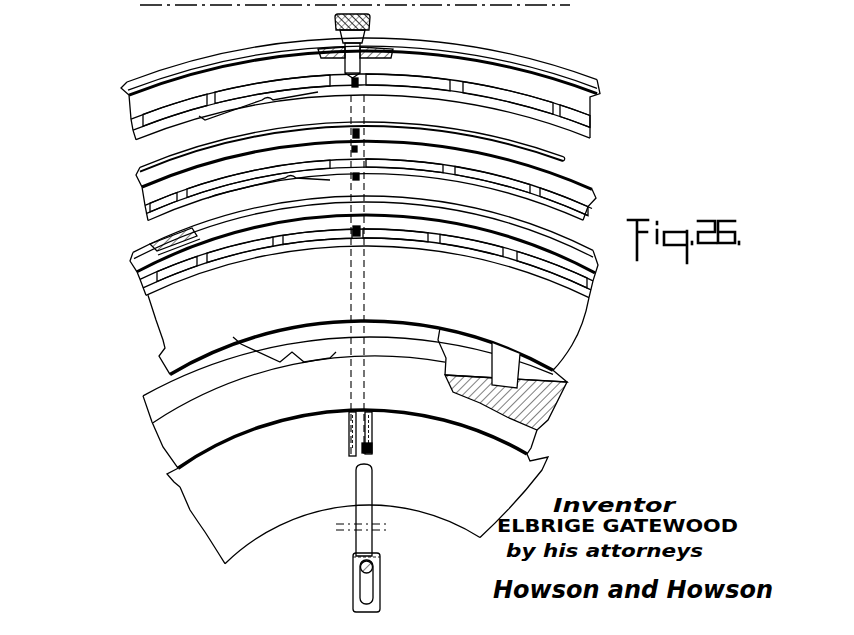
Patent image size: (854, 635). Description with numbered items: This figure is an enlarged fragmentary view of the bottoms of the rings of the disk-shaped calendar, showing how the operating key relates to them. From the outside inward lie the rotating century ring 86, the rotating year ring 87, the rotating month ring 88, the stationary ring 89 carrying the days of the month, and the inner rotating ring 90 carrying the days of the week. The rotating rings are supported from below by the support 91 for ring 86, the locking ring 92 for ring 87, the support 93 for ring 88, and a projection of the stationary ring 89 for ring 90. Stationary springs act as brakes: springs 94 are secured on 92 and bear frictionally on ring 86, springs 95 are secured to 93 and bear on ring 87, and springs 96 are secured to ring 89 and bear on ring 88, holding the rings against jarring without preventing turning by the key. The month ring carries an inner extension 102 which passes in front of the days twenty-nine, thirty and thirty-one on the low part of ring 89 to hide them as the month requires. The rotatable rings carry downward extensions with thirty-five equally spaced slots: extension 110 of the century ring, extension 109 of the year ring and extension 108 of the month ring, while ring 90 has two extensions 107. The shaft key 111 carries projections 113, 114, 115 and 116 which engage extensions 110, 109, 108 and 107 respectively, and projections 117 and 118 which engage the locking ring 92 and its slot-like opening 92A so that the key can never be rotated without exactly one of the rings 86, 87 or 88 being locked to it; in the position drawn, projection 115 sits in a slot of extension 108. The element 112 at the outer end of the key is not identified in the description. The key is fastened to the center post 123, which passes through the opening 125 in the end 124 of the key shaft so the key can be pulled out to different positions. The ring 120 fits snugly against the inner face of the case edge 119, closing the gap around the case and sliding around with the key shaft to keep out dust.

The century ring 86 is at (153, 139).
The year ring 87 is at (142, 189).
The month ring 88 is at (167, 308).
The stationary ring 89 is at (190, 430).
The inner ring 90 is at (210, 498).
The support 91 is at (140, 110).
The locking ring 92 is at (345, 160).
The slot-like opening 92A is at (560, 157).
The support 93 is at (227, 229).
The springs 94 is at (213, 123).
The springs 95 is at (213, 202).
The springs 96 is at (293, 328).
The inner extension 102 is at (508, 373).
The extensions 107 is at (350, 432).
The extension 108 is at (157, 285).
The extension 109 is at (146, 205).
The extension 110 is at (317, 85).
The key 111 is at (360, 50).
The knurled knob 112 is at (335, 23).
The projection 113 is at (357, 88).
The projection 114 is at (365, 177).
The projection 115 is at (363, 235).
The projection 116 is at (373, 450).
The projection 117 is at (350, 128).
The projection 118 is at (350, 148).
The edge of the case 119 is at (140, 78).
The ring 120 is at (180, 78).
The center post 123 is at (353, 565).
The end of key shaft 124 is at (372, 603).
The opening 125 is at (370, 580).